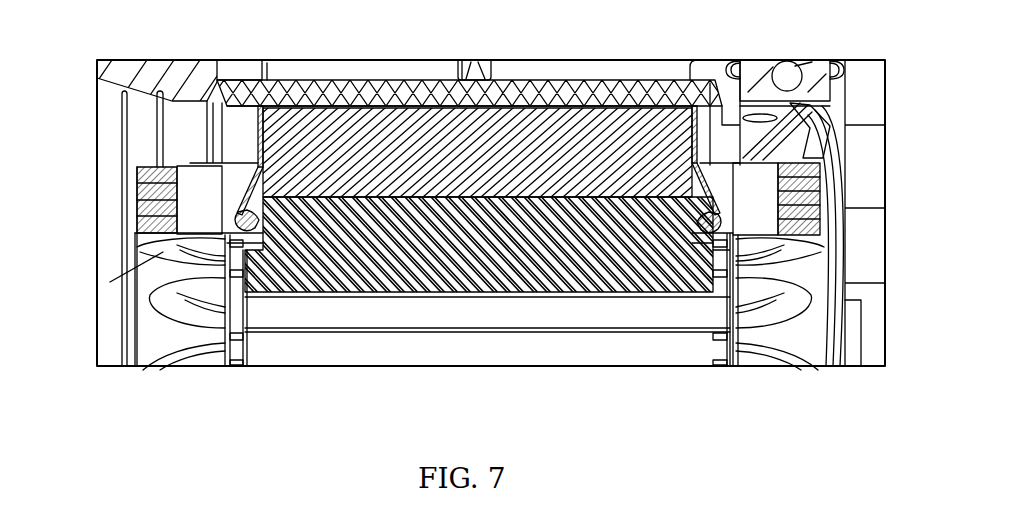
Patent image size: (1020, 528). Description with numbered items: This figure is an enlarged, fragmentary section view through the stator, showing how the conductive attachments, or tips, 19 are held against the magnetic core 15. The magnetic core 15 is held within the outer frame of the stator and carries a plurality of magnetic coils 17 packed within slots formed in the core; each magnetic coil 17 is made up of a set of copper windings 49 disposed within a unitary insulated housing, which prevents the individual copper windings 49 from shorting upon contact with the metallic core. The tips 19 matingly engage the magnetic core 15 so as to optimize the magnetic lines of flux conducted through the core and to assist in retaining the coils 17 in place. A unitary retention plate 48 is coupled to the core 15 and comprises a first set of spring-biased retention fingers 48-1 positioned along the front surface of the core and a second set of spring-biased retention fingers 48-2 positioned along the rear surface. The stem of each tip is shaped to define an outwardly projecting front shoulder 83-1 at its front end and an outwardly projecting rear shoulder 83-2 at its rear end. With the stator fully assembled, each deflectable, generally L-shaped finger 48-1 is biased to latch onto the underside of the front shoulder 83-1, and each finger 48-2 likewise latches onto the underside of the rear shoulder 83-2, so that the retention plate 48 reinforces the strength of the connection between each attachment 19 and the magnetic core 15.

The retention plate 48 is at (330, 100).
The magnetic core 15 is at (557, 122).
The copper windings 49 is at (137, 208).
The magnetic coils 17 is at (152, 307).
The conductive attachments 19 is at (541, 285).
The first set of spring-biased retention fingers 48-1 is at (248, 200).
The front shoulder 83-1 is at (238, 216).
The second set of spring-biased retention fingers 48-2 is at (714, 199).
The rear shoulder 83-2 is at (722, 221).